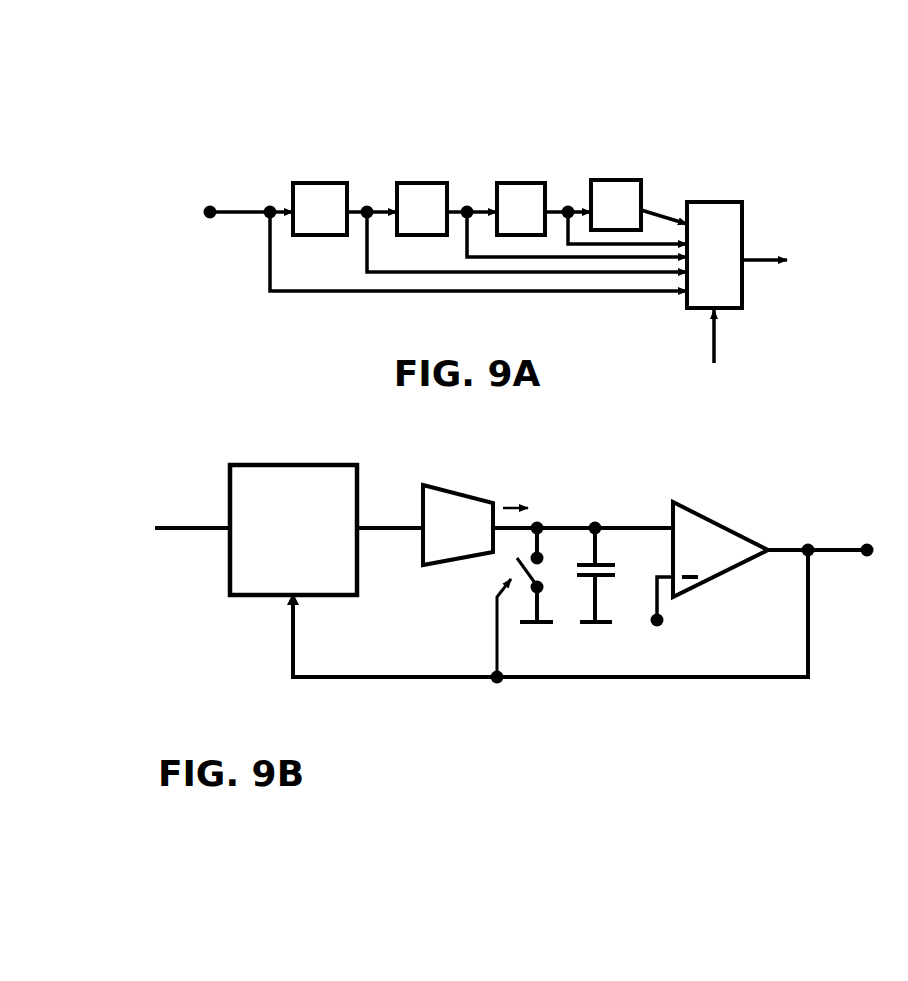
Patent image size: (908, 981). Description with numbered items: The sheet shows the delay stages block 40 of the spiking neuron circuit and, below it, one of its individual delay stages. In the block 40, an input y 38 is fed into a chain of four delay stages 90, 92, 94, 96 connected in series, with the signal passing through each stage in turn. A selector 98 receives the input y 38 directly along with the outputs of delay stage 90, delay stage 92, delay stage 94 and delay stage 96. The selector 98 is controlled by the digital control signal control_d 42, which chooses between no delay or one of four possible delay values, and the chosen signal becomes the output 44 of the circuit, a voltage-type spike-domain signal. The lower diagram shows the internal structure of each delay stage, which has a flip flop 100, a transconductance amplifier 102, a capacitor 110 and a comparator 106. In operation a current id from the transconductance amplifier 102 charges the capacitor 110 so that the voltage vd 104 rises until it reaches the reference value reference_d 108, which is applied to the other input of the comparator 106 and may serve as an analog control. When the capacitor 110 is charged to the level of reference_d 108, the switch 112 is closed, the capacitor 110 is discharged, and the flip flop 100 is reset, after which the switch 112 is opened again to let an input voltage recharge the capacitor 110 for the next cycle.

In FIG. 9A, the input y 38 is at (237, 208).
In FIG. 9A, the delay stages block 40 is at (742, 110).
In FIG. 9A, the control_d 42 is at (717, 342).
In FIG. 9A, the output 44 is at (755, 258).
In FIG. 9A, the delay stage 90 is at (332, 182).
In FIG. 9A, the delay stage 92 is at (427, 182).
In FIG. 9A, the delay stage 94 is at (522, 180).
In FIG. 9A, the delay stage 96 is at (617, 179).
In FIG. 9A, the selector 98 is at (712, 202).
In FIG. 9B, the flip flop 100 is at (288, 465).
In FIG. 9B, the transconductance amplifier 102 is at (462, 488).
In FIG. 9B, the vd 104 is at (643, 523).
In FIG. 9B, the comparator 106 is at (710, 513).
In FIG. 9B, the reference_d 108 is at (657, 622).
In FIG. 9B, the capacitor 110 is at (612, 580).
In FIG. 9B, the switch 112 is at (485, 570).